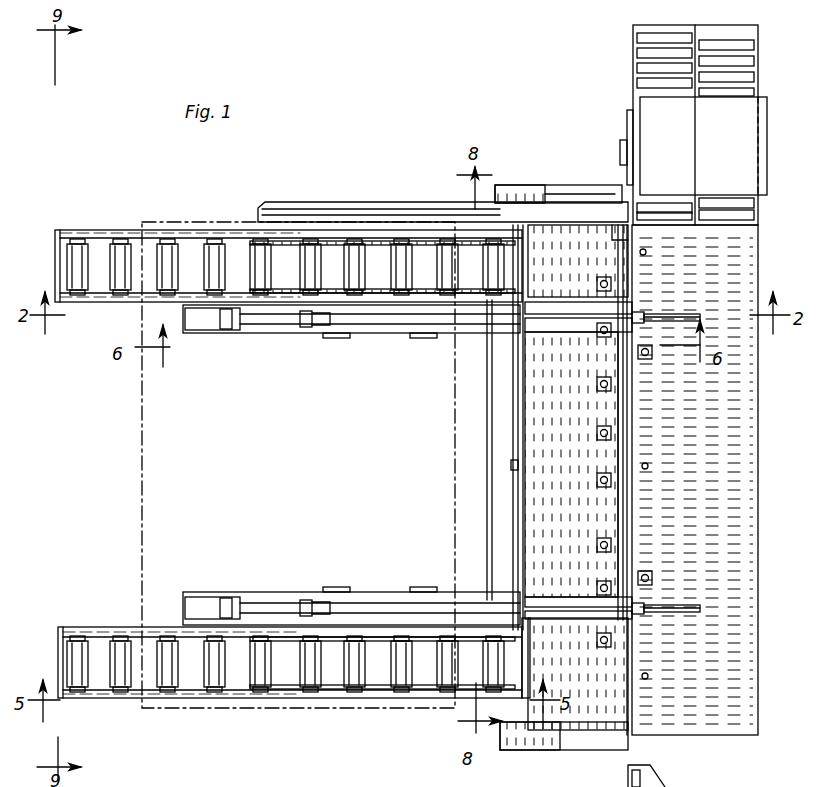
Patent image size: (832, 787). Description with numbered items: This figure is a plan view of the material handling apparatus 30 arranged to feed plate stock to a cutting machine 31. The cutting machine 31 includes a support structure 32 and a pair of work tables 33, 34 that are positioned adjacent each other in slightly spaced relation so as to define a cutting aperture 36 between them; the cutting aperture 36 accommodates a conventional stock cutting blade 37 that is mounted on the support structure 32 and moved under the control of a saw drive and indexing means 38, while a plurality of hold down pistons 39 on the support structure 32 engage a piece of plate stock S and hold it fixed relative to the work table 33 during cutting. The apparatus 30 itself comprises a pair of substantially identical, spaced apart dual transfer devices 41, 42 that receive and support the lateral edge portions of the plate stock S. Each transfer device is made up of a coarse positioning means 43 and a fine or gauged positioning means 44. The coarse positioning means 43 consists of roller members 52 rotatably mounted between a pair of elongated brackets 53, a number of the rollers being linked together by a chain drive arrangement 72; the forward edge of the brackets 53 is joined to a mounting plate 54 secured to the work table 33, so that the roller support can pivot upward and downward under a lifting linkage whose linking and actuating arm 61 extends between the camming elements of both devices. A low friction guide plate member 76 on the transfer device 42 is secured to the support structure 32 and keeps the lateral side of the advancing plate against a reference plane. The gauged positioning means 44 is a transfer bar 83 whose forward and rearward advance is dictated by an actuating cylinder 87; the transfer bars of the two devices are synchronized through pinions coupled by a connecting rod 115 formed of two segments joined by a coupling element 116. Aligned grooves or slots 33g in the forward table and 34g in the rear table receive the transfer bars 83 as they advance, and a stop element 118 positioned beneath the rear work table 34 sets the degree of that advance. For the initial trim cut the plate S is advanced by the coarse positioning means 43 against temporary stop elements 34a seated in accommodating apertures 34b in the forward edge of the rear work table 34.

The piece of plate stock S is at (142, 415).
The material handling apparatus 30 is at (262, 186).
The cutting machine 31 is at (670, 406).
The support structure 32 is at (570, 185).
The work table 33 is at (514, 436).
The grooves or slots 33g is at (545, 312).
The work table 34 is at (692, 480).
The temporary stop elements 34a is at (652, 360).
The accommodating apertures 34b is at (648, 464).
The grooves or slots 34g is at (672, 312).
The cutting aperture 36 is at (630, 528).
The stock cutting blade 37 is at (627, 128).
The saw drive and indexing means 38 is at (703, 146).
The hold down pistons 39 is at (598, 386).
The transfer device 41 is at (176, 606).
The transfer device 42 is at (288, 458).
The coarse positioning means 43 is at (373, 246).
The fine or gauged positioning means 44 is at (372, 332).
The roller members 52 is at (215, 265).
The elongated brackets 53 is at (88, 236).
The mounting plate 54 is at (523, 667).
The linking and actuating arm 61 is at (523, 550).
The chain drive arrangement 72 is at (322, 245).
The low friction guide plate member 76 is at (428, 218).
The transfer bar 83 is at (575, 325).
The actuating cylinder 87 is at (285, 320).
The connecting rod 115 is at (513, 440).
The coupling element 116 is at (511, 464).
The stop element 118 is at (650, 312).